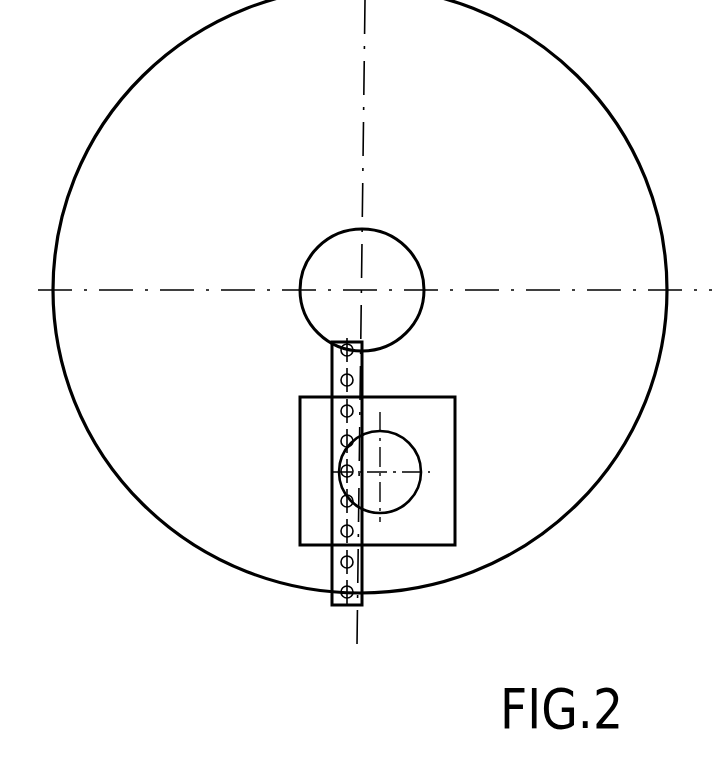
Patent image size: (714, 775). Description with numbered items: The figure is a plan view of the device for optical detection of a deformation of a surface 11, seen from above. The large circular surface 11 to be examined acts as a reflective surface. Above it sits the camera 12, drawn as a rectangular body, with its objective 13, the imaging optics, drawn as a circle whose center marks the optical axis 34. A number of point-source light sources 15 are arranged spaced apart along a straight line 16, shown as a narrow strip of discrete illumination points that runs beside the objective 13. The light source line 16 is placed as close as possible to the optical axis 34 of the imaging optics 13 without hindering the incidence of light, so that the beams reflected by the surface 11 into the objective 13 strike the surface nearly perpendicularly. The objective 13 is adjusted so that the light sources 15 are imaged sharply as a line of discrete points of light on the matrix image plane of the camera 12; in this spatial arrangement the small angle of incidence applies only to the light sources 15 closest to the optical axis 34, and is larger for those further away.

The surface 11 is at (140, 120).
The camera 12 is at (442, 449).
The objective 13 is at (395, 447).
The point-source light sources 15 is at (341, 467).
The straight line 16 is at (338, 372).
The optical axis 34 is at (382, 476).